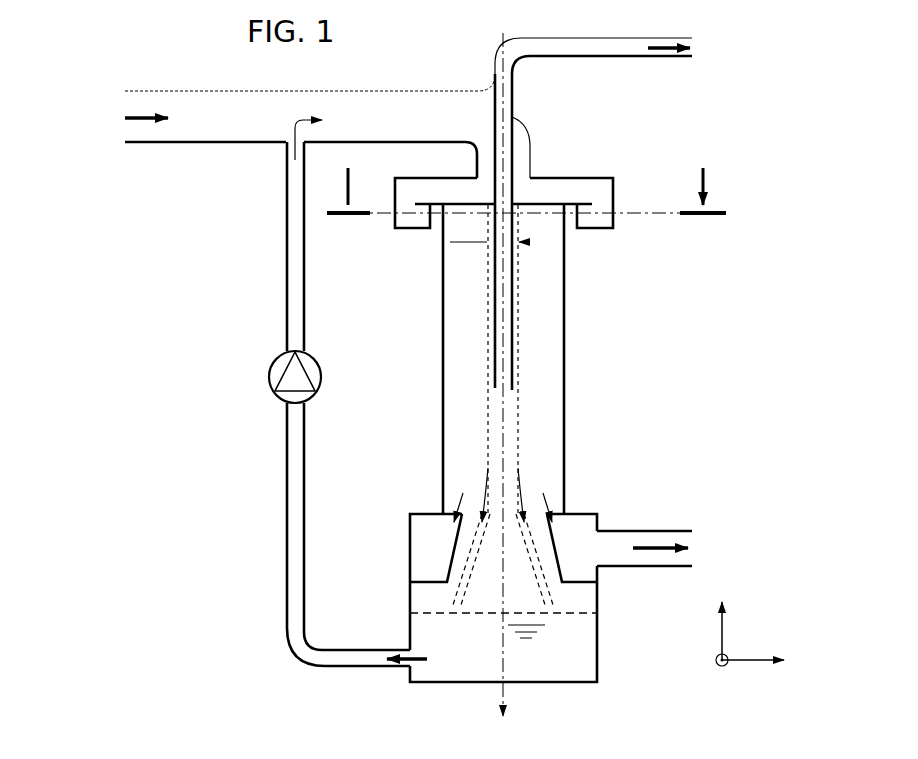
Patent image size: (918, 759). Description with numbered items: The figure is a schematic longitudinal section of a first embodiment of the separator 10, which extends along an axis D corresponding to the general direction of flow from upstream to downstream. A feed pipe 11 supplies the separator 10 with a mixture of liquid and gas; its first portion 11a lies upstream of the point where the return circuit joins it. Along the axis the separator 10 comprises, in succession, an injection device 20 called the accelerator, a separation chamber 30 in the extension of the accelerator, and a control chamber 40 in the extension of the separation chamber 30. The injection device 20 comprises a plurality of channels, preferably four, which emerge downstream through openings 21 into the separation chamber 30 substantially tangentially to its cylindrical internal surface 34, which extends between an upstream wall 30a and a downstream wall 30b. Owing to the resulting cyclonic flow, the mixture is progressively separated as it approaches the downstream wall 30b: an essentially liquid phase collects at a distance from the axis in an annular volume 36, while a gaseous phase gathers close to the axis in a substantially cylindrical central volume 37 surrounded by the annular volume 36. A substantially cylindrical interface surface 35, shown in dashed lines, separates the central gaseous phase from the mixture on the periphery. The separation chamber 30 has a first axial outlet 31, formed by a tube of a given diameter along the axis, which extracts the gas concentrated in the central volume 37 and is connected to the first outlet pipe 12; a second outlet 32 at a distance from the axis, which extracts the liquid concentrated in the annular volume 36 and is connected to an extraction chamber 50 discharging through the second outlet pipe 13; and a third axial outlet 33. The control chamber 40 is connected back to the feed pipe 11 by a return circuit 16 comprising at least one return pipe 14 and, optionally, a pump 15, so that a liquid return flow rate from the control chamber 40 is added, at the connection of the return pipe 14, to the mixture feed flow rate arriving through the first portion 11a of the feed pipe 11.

The separator 10 is at (698, 331).
The feed pipe 11 is at (402, 90).
The first portion of the feed pipe 11a is at (168, 90).
The first outlet pipe 12 is at (584, 58).
The second outlet pipe 13 is at (658, 530).
The return pipe 14 is at (287, 258).
The pump 15 is at (272, 364).
The return circuit 16 is at (244, 468).
The injection device 20 is at (594, 180).
The openings 21 is at (554, 220).
The separation chamber 30 is at (551, 341).
The upstream wall 30a is at (528, 214).
The downstream wall 30b is at (535, 510).
The first axial outlet 31 is at (515, 399).
The second outlet 32 is at (452, 501).
The third axial outlet 33 is at (467, 476).
The cylindrical internal surface 34 is at (564, 360).
The interface surface 35 is at (485, 410).
The annular volume 36 is at (470, 347).
The central volume 37 is at (516, 453).
The control chamber 40 is at (583, 652).
The extraction chamber 50 is at (577, 530).